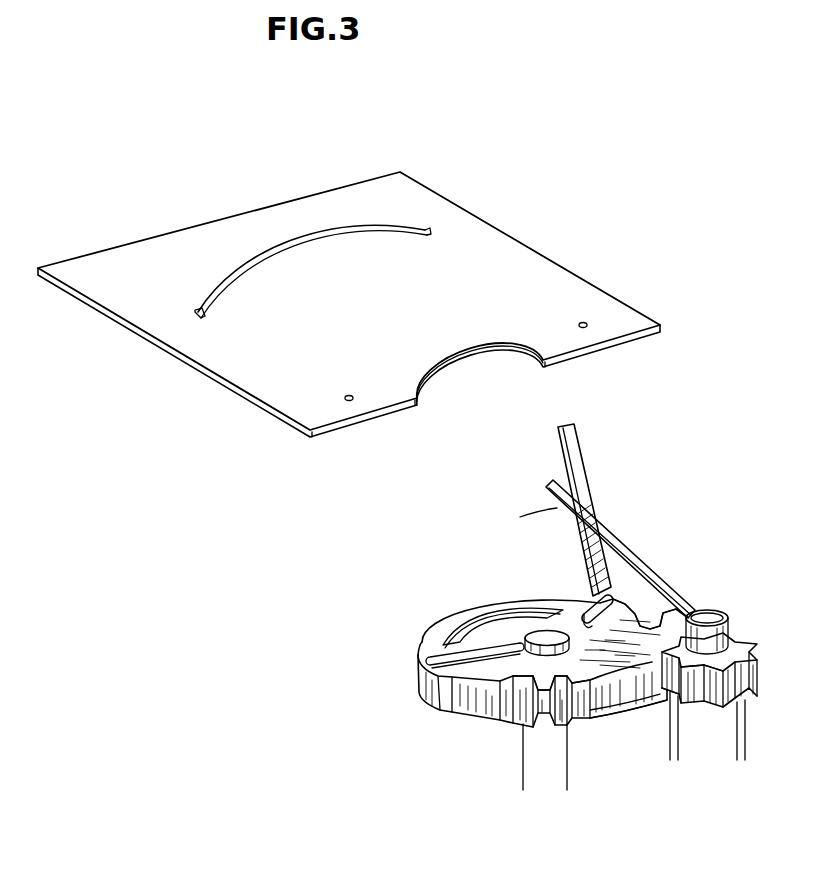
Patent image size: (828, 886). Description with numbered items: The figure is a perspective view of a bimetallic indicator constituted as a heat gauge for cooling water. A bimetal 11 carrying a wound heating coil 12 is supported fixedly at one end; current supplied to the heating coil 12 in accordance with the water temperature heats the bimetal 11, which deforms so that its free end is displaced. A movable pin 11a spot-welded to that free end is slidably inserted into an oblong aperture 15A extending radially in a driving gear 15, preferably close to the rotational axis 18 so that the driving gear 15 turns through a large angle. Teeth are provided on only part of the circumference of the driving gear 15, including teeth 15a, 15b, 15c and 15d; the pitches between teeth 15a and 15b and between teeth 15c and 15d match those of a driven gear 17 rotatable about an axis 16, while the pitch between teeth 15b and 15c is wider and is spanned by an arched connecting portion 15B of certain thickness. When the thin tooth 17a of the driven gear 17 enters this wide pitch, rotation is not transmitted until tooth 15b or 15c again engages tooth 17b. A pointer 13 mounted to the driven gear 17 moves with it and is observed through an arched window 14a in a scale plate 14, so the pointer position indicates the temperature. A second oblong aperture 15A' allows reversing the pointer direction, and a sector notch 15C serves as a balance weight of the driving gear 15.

The bimetal 11 is at (560, 467).
The movable pin 11a is at (582, 618).
The heating coil 12 is at (573, 533).
The pointer 13 is at (567, 500).
The scale plate 14 is at (568, 342).
The arched window 14a is at (306, 228).
The driving gear 15 is at (507, 640).
The oblong aperture 15A is at (646, 579).
The another oblong aperture 15A' is at (439, 653).
The arched connecting portion 15B is at (607, 718).
The sector notch 15C is at (460, 632).
The tooth 15a is at (676, 620).
The tooth 15b is at (652, 625).
The tooth 15c is at (590, 720).
The tooth 15d is at (540, 676).
The axis 16 is at (708, 613).
The driven gear 17 is at (743, 697).
The tooth 17a is at (690, 672).
The tooth 17b is at (667, 693).
The axis 18 is at (547, 640).